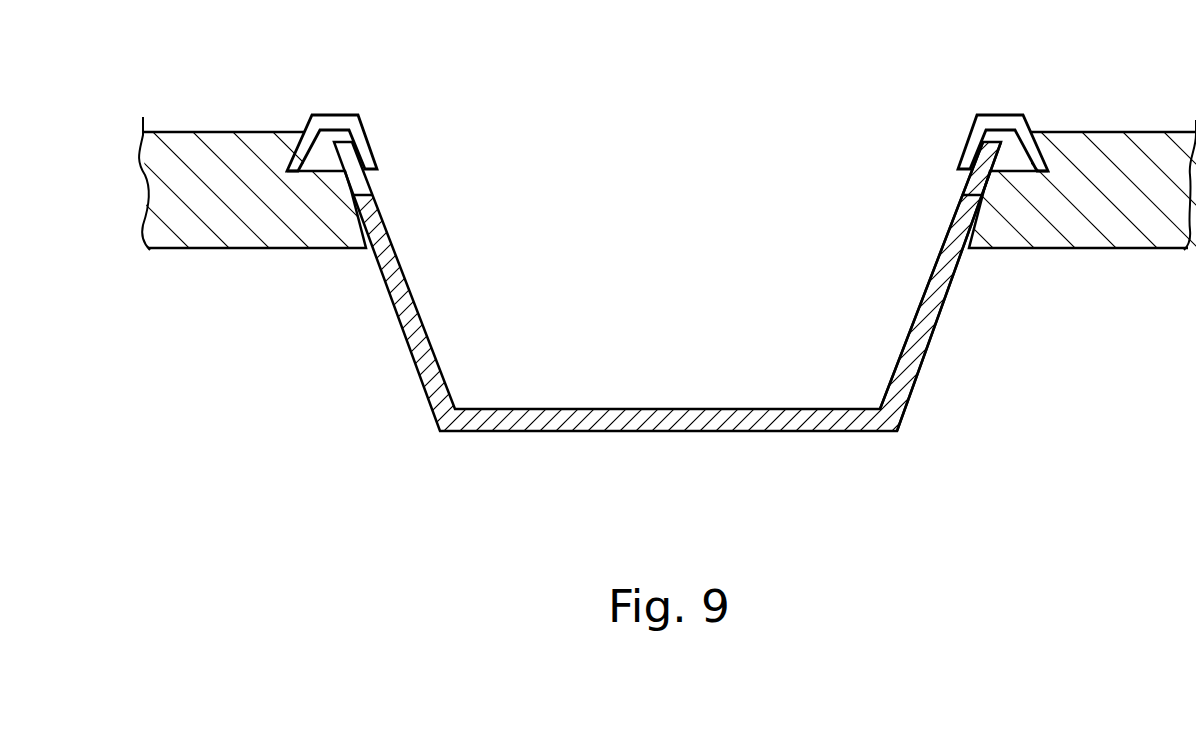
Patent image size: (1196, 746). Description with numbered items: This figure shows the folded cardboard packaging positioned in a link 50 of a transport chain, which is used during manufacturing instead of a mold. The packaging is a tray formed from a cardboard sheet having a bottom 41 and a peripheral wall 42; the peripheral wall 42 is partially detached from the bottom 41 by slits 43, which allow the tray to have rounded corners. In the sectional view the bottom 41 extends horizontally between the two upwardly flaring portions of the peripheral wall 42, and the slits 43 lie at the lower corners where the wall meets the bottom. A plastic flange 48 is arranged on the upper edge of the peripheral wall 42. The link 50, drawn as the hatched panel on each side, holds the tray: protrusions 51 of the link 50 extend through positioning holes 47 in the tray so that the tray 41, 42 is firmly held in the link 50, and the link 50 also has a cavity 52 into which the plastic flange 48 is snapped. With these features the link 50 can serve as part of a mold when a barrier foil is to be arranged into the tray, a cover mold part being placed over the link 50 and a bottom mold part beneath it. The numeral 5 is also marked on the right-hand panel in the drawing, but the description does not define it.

The panel 5 is at (1128, 230).
The bottom 41 is at (656, 422).
The peripheral wall 42 is at (918, 357).
The slits 43 is at (444, 434).
The positioning holes 47 is at (372, 229).
The plastic flange 48 is at (358, 133).
The link 50 is at (196, 234).
The protrusions 51 is at (370, 212).
The cavity 52 is at (327, 148).